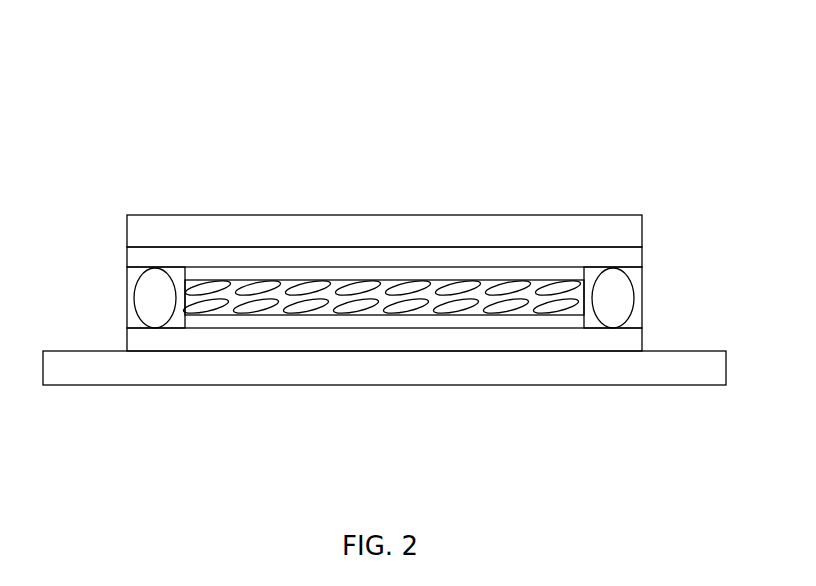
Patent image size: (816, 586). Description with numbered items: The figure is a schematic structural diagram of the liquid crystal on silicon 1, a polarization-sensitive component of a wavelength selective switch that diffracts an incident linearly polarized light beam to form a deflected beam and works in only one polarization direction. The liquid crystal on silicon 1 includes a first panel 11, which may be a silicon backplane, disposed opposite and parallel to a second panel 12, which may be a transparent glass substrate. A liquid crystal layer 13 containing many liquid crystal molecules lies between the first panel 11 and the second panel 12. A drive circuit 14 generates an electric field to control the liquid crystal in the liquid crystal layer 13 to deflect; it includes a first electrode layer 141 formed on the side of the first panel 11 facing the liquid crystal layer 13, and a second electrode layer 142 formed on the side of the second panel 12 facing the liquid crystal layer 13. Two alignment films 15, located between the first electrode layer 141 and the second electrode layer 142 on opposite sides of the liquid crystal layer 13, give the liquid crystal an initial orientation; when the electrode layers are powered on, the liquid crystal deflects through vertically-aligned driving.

The liquid crystal on silicon 1 is at (385, 90).
The first panel 11 is at (544, 368).
The second panel 12 is at (490, 228).
The liquid crystal layer 13 is at (306, 288).
The drive circuit 14 is at (384, 367).
The first electrode layer 141 is at (312, 342).
The second electrode layer 142 is at (370, 255).
The alignment film 15 is at (205, 325).